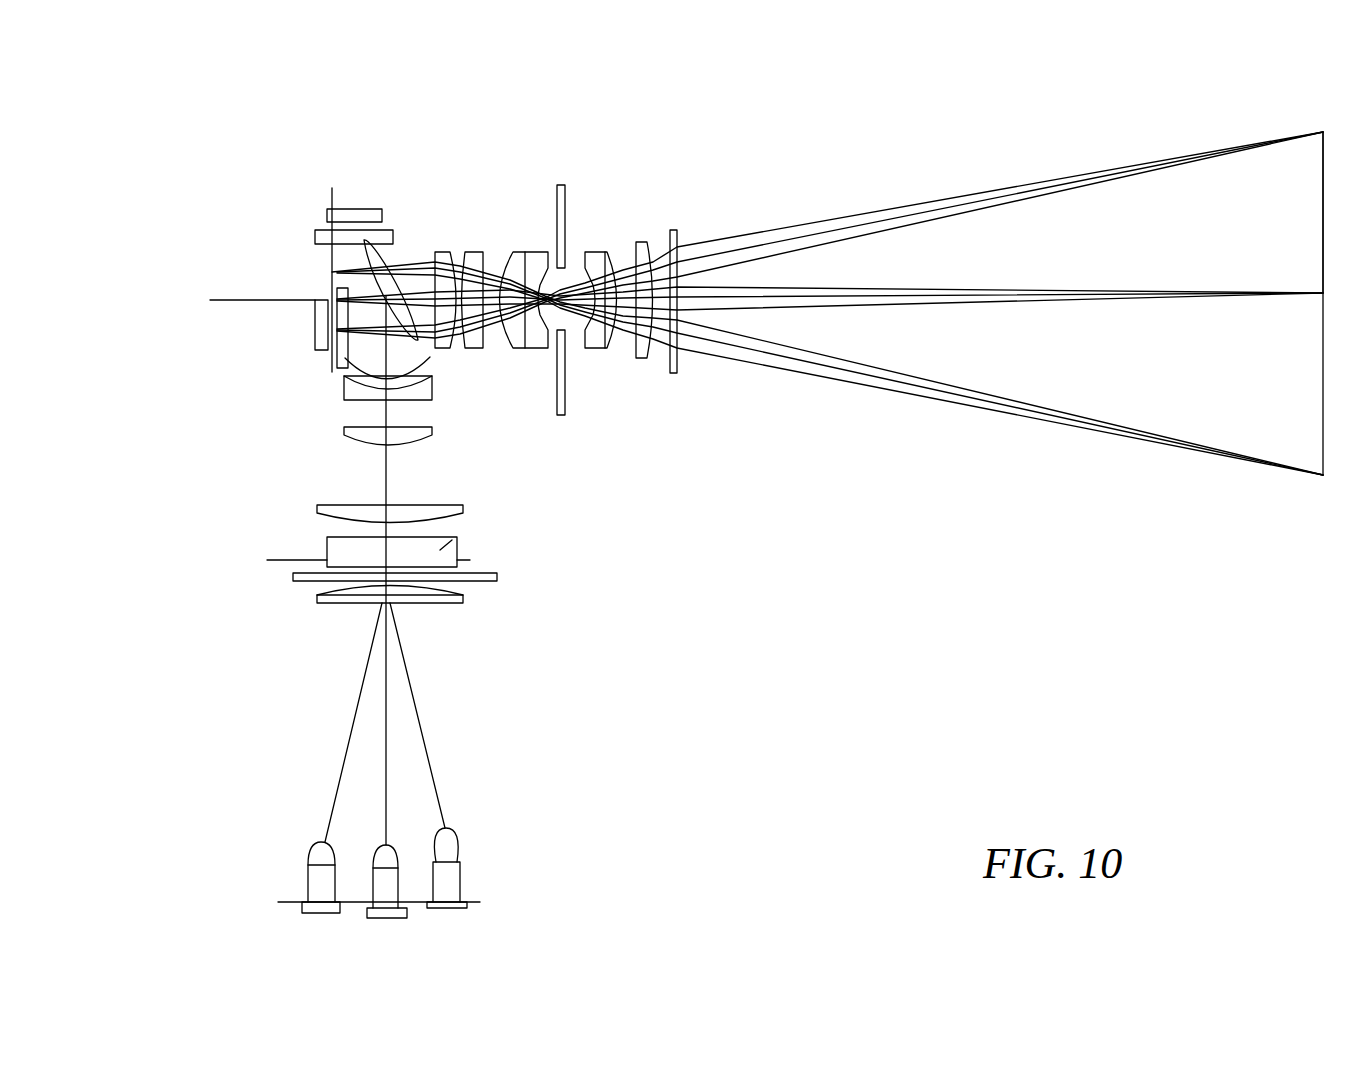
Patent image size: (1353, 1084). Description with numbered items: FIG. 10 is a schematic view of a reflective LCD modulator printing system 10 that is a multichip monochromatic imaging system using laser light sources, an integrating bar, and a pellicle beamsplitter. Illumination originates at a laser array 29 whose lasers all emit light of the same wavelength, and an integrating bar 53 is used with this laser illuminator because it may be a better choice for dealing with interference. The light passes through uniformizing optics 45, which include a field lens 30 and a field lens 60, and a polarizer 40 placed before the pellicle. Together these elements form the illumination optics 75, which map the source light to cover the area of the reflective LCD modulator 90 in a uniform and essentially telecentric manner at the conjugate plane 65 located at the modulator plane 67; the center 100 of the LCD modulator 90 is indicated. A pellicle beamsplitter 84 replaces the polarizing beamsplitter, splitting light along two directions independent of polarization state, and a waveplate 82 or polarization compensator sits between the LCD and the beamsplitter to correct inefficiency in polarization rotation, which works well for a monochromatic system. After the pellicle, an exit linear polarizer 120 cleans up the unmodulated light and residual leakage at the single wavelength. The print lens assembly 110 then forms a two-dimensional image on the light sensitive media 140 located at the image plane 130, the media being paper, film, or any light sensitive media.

The printer 10 is at (258, 170).
The laser array 29 is at (572, 715).
The field lens 30 is at (465, 597).
The polarizer 40 is at (300, 583).
The uniformizing optics 45 is at (366, 597).
The integrating bar 53 is at (457, 543).
The field lens 60 is at (347, 503).
The conjugate plane 65 is at (332, 190).
The modulator plane 67 is at (350, 226).
The illumination optics 75 is at (773, 380).
The waveplate 82 is at (328, 293).
The pellicle beamsplitter 84 is at (392, 262).
The reflective LCD modulator 90 is at (325, 270).
The center 100 is at (335, 387).
The print lens assembly 110 is at (645, 410).
The exit linear polarizer 120 is at (678, 232).
The image plane 130 is at (1323, 368).
The light sensitive media 140 is at (1323, 256).